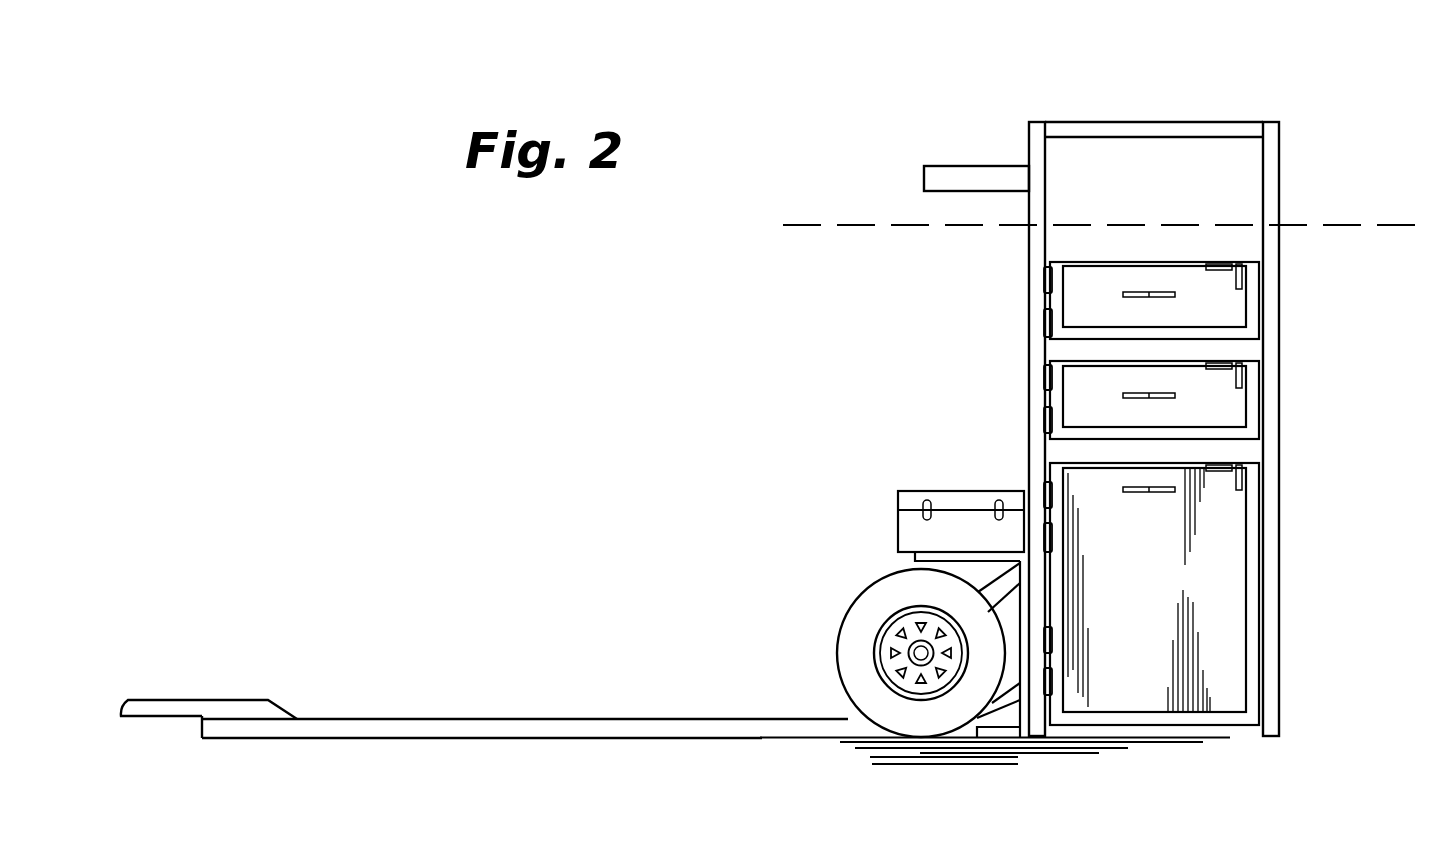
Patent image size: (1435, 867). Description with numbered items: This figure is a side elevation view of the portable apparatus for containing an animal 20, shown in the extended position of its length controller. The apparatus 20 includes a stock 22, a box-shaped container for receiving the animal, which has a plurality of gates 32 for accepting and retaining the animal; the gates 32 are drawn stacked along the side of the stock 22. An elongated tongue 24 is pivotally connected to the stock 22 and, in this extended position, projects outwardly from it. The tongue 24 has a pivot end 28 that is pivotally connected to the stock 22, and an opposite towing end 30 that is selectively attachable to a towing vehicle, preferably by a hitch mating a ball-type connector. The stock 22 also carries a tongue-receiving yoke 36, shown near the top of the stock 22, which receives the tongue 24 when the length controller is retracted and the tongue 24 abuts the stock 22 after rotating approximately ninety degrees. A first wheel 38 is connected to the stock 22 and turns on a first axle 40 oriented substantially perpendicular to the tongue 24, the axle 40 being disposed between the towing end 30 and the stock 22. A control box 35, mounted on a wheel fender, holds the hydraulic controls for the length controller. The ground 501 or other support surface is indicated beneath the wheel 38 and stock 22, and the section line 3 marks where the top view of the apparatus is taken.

The line 3— 3 is at (812, 258).
The portable apparatus for containing an animal 20 is at (670, 418).
The stock 22 is at (1281, 185).
The tongue 24 is at (498, 718).
The pivot end 28 is at (951, 737).
The towing end 30 is at (145, 700).
The gates 32 is at (1222, 312).
The control box 35 is at (976, 491).
The tongue-receiving yoke 36 is at (966, 166).
The first wheel 38 is at (845, 693).
The first axle 40 is at (908, 648).
The ground 501 is at (1032, 753).